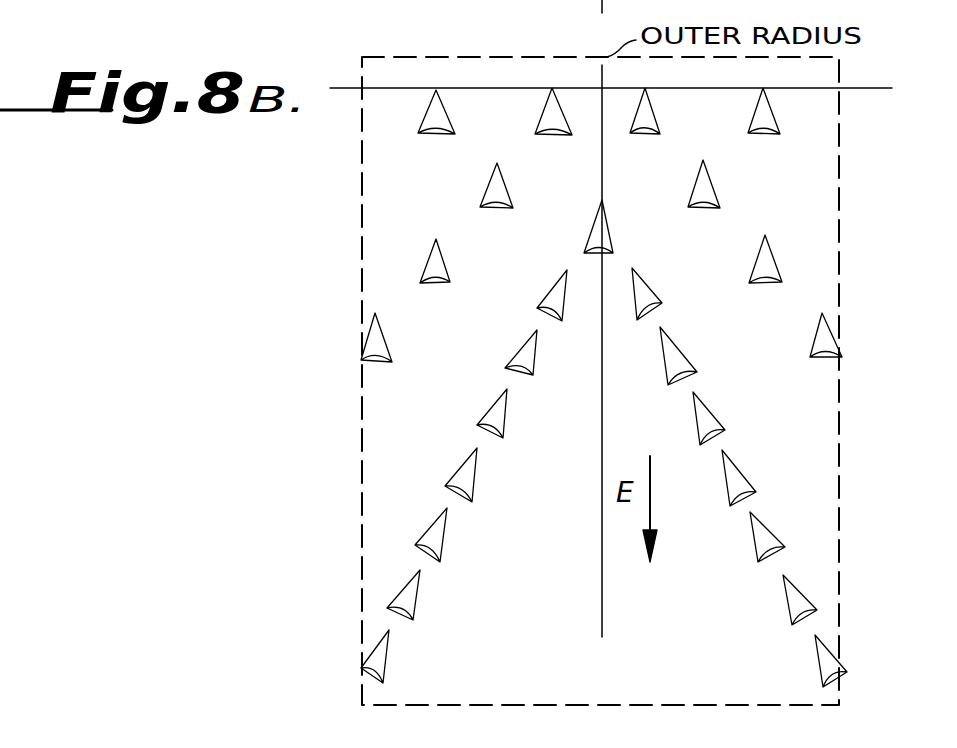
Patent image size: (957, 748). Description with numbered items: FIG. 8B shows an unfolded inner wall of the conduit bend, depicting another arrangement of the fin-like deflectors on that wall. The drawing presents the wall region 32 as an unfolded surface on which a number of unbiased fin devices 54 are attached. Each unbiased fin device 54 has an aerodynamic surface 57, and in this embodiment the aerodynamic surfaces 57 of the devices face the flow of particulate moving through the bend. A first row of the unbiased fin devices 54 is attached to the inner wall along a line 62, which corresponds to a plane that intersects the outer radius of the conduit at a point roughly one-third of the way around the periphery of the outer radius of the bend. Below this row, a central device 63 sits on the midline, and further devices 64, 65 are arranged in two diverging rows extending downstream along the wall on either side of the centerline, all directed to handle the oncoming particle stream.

The housing wall region 32 is at (846, 131).
The unbiased fin device 54 is at (448, 118).
The aerodynamic surface 57 is at (548, 298).
The line 62 is at (858, 87).
The particle 63 is at (604, 203).
The particle stream 64 is at (504, 370).
The particle stream 65 is at (690, 358).